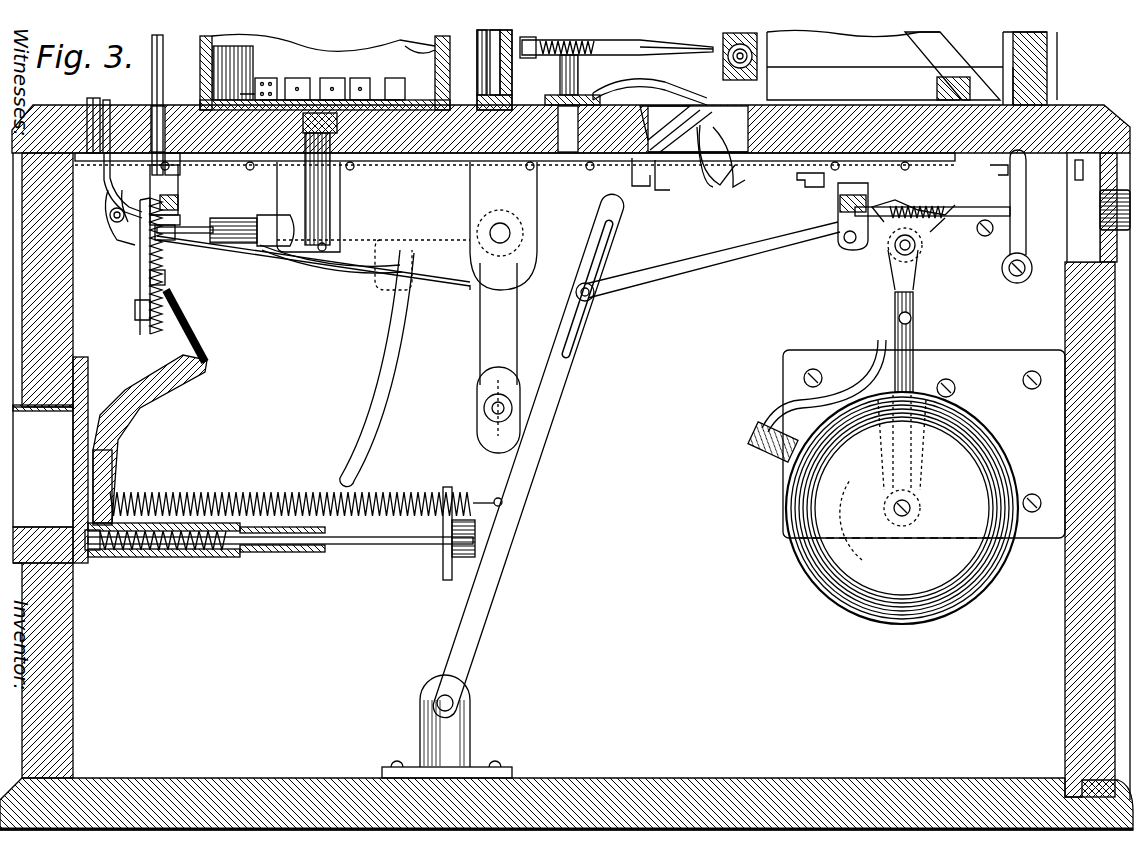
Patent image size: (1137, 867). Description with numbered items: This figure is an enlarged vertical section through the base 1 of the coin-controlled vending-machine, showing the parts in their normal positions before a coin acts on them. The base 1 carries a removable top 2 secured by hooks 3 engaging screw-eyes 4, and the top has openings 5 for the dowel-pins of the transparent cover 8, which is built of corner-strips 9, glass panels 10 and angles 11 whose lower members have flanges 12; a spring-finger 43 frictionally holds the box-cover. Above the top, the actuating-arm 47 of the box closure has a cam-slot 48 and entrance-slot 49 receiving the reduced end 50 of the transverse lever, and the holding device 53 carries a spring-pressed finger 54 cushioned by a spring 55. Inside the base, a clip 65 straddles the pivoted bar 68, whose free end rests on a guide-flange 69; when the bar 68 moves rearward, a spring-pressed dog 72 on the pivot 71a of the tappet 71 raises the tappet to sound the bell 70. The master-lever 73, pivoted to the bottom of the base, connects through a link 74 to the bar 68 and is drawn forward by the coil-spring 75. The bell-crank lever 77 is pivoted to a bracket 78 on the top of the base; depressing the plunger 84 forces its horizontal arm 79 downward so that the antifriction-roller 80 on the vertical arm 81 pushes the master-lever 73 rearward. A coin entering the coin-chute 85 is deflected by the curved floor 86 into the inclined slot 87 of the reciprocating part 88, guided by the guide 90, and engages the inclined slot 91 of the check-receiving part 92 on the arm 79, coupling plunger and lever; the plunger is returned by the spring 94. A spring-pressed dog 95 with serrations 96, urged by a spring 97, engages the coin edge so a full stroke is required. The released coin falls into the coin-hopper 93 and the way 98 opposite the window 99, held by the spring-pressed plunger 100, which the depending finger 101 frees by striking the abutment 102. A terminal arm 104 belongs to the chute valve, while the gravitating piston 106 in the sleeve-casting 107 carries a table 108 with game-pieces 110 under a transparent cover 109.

The base 1 is at (75, 675).
The removable top 2 is at (400, 160).
The hooks 3 is at (1030, 183).
The screw-eyes 4 is at (1010, 165).
The openings or perforations 5 is at (1063, 207).
The transparent cover 8 is at (912, 67).
The corner-strips 9 is at (489, 78).
The transparent panels 10 is at (493, 40).
The angles 11 is at (1008, 100).
The flanges 12 is at (1047, 108).
The spring-finger 43 is at (643, 78).
The actuating-arm 47 is at (723, 190).
The cam-slot 48 is at (713, 193).
The entrance-slot 49 is at (670, 190).
The reduced end 50 is at (670, 180).
The holding device 53 is at (593, 57).
The spring-pressed finger 54 is at (645, 48).
The spring 55 is at (557, 62).
The clip 65 is at (837, 187).
The pivoted bar 68 is at (855, 252).
The guide-flange 69 is at (965, 217).
The bell 70 is at (865, 565).
The tappet 71 is at (785, 405).
The pivot 71a is at (895, 280).
The spring-pressed dog 72 is at (887, 207).
The master-lever 73 is at (533, 473).
The link 74 is at (722, 268).
The coil-spring 75 is at (233, 497).
The bell-crank lever 77 is at (393, 223).
The bracket 78 is at (520, 190).
The horizontal arm 79 is at (267, 220).
The antifriction-roller 80 is at (490, 433).
The vertical arm 81 is at (495, 320).
The plunger 84 is at (160, 67).
The coin-chute 85 is at (85, 108).
The curved floor 86 is at (112, 125).
The inclined slot 87 is at (180, 217).
The reciprocating part 88 is at (180, 173).
The guide 90 is at (157, 277).
The inclined slot 91 is at (200, 230).
The check-receiving part 92 is at (233, 257).
The coin-hopper 93 is at (193, 370).
The spring 94 is at (365, 272).
The spring-pressed dog 95 is at (140, 267).
The serrations 96 is at (147, 313).
The spring 97 is at (127, 220).
The way 98 is at (100, 460).
The window 99 is at (77, 443).
The spring-pressed plunger 100 is at (353, 553).
The depending finger 101 is at (379, 370).
The abutment 102 is at (447, 580).
The terminal arm 104 is at (177, 155).
The gravitating piston 106 is at (323, 252).
The sleeve-casting 107 is at (333, 220).
The table 108 is at (415, 60).
The transparent cover 109 is at (213, 62).
The game-pieces 110 is at (363, 80).